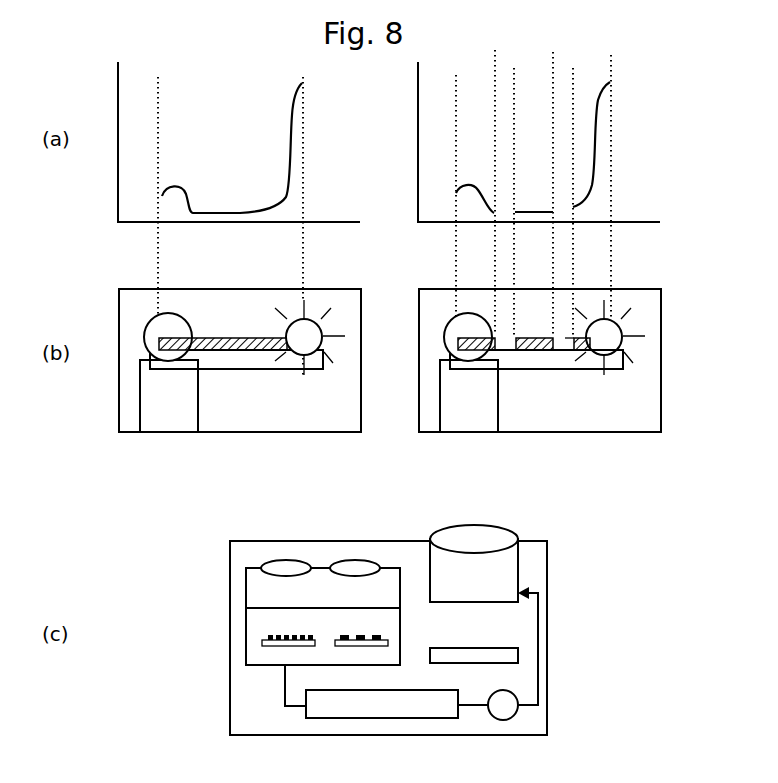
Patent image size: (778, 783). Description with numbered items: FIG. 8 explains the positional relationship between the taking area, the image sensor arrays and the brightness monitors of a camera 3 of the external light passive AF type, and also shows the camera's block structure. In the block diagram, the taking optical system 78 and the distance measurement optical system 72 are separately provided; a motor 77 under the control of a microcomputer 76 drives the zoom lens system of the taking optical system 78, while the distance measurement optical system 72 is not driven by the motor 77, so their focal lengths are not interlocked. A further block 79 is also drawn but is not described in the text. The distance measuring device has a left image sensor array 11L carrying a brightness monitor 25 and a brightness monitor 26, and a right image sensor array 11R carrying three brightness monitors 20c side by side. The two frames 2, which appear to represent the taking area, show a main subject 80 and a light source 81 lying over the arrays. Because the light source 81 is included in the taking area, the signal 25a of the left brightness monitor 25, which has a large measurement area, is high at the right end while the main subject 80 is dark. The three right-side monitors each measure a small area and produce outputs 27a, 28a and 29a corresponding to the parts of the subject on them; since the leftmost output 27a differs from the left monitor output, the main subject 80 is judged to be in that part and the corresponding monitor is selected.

The biosensor 2 is at (338, 289).
The camera 3 is at (528, 533).
The left image sensor array 11L is at (290, 370).
The right image sensor array 11R is at (590, 370).
The brightness monitors 20c is at (362, 635).
The brightness monitor 25 is at (264, 636).
The brightness signal of brightness monitor 25 25a is at (300, 170).
The brightness monitor 26 is at (285, 632).
The output signal of brightness monitor 27 27a is at (476, 176).
The output signal of brightness monitor 28 28a is at (538, 203).
The output signal of brightness monitor 29 29a is at (601, 170).
The distance measurement optical system 72 is at (293, 557).
The microcomputer 76 is at (362, 720).
The motor 77 is at (506, 721).
The taking optical system 78 is at (476, 524).
The display 79 is at (518, 657).
The main subject 80 is at (166, 414).
The light source 81 is at (330, 334).